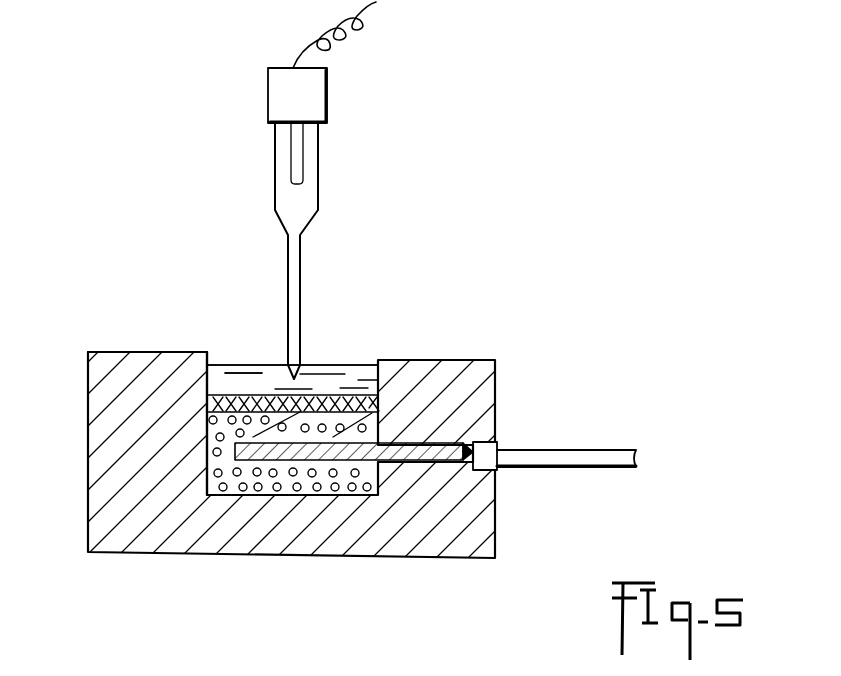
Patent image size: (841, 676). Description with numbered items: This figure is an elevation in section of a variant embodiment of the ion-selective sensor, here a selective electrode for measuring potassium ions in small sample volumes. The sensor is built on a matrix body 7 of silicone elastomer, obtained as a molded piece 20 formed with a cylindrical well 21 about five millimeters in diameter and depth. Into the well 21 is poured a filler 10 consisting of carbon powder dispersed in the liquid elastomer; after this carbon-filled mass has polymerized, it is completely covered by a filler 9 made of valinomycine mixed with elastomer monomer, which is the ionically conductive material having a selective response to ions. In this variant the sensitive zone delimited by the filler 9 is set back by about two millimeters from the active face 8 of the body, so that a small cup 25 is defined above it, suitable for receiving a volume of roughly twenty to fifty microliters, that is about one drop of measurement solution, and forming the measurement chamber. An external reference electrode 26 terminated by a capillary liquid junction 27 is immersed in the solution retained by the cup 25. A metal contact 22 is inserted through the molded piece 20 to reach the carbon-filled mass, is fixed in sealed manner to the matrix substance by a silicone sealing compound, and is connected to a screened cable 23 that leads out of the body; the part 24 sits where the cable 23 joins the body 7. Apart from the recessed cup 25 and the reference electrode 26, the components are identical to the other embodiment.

The matrix body 7 is at (262, 395).
The active face 8 is at (150, 352).
The filler 9 is at (342, 397).
The filler 10 is at (397, 412).
The molded piece 20 is at (395, 558).
The cylindrical well 21 is at (207, 447).
The metal contact 22 is at (517, 446).
The screened cable 23 is at (579, 458).
The connector 24 is at (503, 472).
The cup 25 is at (213, 378).
The external reference electrode 26 is at (305, 195).
The capillary liquid junction 27 is at (318, 376).